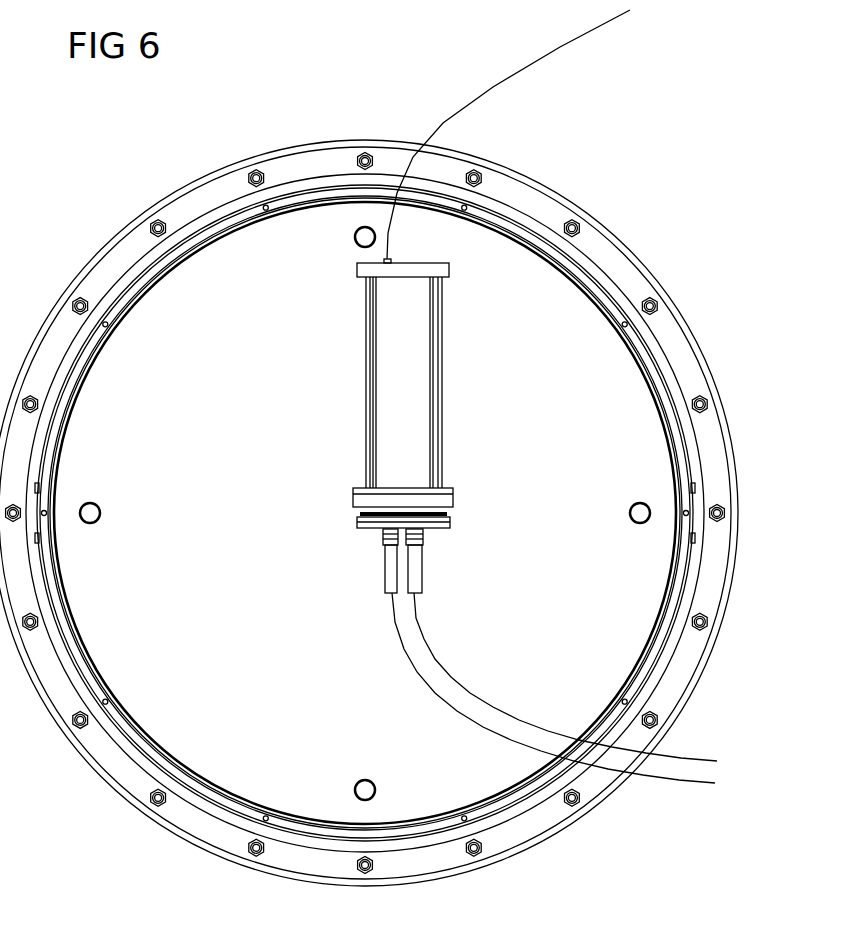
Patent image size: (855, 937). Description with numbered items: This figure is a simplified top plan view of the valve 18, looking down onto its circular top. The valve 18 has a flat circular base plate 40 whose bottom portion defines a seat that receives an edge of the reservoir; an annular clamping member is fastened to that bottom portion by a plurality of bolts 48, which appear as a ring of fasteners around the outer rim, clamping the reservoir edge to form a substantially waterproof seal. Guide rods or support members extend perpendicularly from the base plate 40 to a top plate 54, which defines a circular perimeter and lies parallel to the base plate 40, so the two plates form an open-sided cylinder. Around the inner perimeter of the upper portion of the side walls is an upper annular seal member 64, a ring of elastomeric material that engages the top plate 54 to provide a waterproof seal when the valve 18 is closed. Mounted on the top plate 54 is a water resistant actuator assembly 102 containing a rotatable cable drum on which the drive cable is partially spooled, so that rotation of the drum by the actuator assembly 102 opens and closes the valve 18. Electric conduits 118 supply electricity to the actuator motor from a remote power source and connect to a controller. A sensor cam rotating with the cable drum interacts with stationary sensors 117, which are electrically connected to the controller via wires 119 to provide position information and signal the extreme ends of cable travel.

The valve 18 is at (90, 203).
The base plate 40 is at (677, 335).
The bolts 48 is at (703, 402).
The upper annular seal member 64 is at (683, 460).
The top plate 54 is at (642, 557).
The actuator assembly 102 is at (432, 373).
The stationary sensors 117 is at (420, 573).
The electric conduits 118 is at (573, 43).
The wires 119 is at (433, 633).